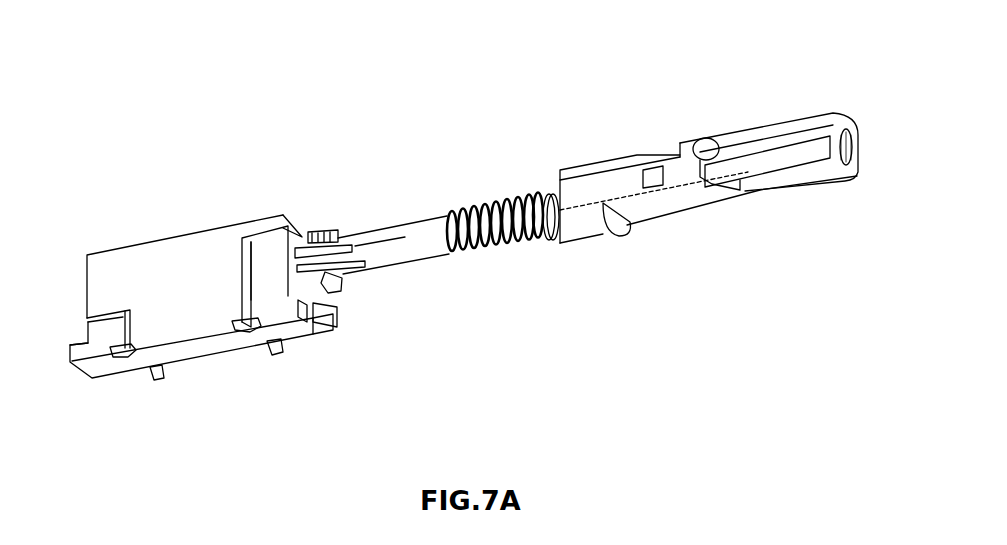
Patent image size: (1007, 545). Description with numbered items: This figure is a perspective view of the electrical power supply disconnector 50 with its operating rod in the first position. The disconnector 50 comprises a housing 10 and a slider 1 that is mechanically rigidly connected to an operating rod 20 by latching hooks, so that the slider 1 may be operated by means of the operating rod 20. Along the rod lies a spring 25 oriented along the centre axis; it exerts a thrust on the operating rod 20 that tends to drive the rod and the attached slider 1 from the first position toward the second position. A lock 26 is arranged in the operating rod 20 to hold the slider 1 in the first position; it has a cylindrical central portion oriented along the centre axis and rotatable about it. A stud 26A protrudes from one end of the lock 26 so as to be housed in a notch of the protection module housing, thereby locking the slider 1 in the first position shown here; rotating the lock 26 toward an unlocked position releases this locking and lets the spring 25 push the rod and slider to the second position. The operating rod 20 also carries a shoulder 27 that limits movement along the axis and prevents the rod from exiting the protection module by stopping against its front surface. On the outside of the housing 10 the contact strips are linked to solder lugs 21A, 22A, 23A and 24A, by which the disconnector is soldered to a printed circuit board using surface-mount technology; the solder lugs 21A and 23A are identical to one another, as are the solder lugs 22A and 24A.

The electrical power supply disconnector 50 is at (108, 86).
The housing 10 is at (182, 260).
The slider 1 is at (309, 228).
The spring 25 is at (453, 210).
The stud 26A is at (707, 143).
The lock 26 is at (849, 140).
The shoulder 27 is at (592, 218).
The operating rod 20 is at (662, 197).
The solder lug 21A is at (113, 348).
The solder lug 22A is at (158, 374).
The solder lug 24A is at (237, 326).
The solder lug 23A is at (284, 348).